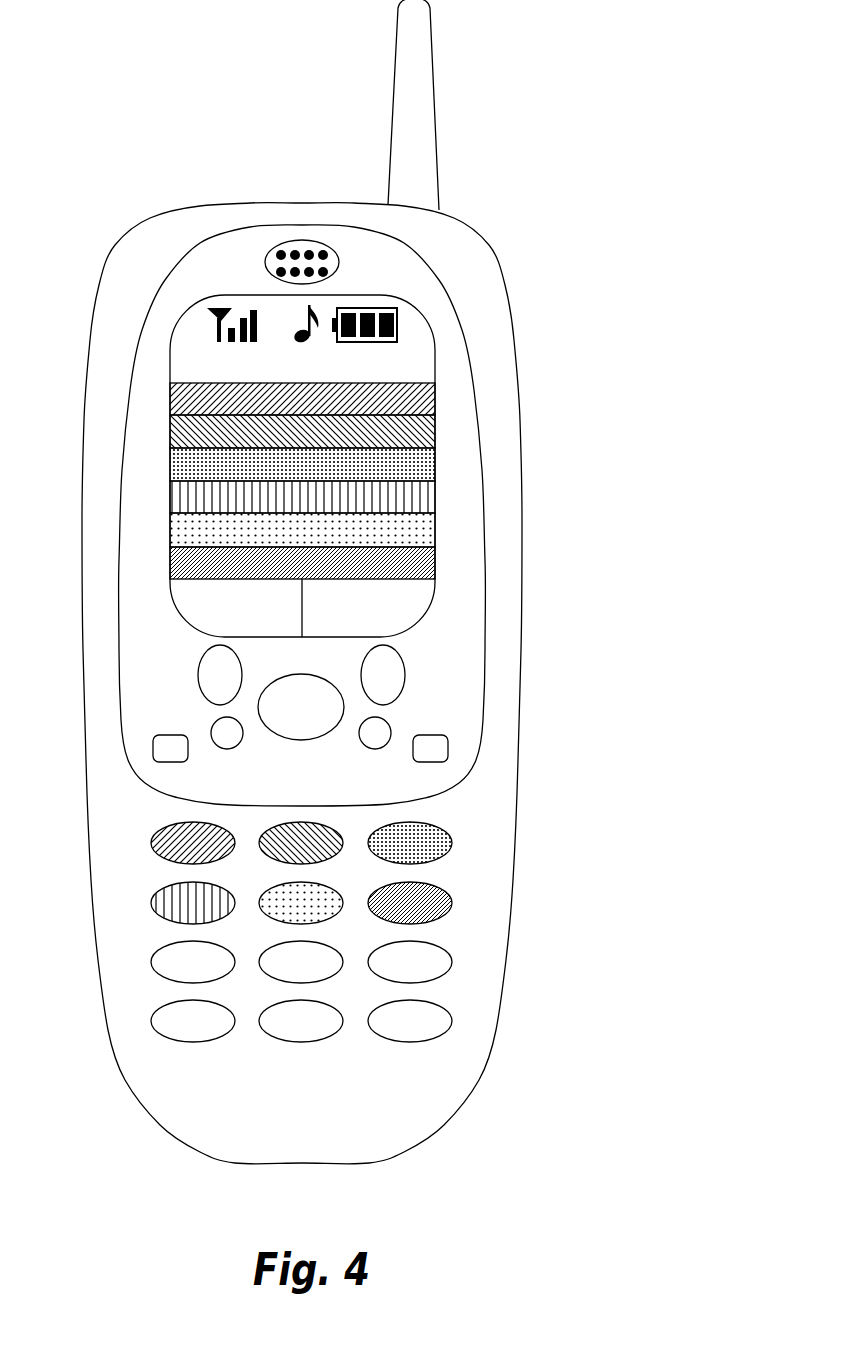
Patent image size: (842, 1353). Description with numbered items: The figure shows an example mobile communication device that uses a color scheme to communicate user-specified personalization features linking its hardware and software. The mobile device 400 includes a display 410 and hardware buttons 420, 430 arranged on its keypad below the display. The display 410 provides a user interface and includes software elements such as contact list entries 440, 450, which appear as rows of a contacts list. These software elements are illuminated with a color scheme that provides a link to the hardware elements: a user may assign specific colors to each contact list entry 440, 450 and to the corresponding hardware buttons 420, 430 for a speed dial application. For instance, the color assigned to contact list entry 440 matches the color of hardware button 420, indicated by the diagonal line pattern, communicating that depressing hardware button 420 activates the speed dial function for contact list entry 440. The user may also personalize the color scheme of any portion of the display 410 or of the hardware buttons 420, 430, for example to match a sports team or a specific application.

The mobile device 400 is at (367, 582).
The display 410 is at (182, 320).
The hardware button 420 is at (170, 830).
The hardware button 430 is at (170, 898).
The contact list entry 440 is at (170, 388).
The contact list entry 450 is at (170, 485).